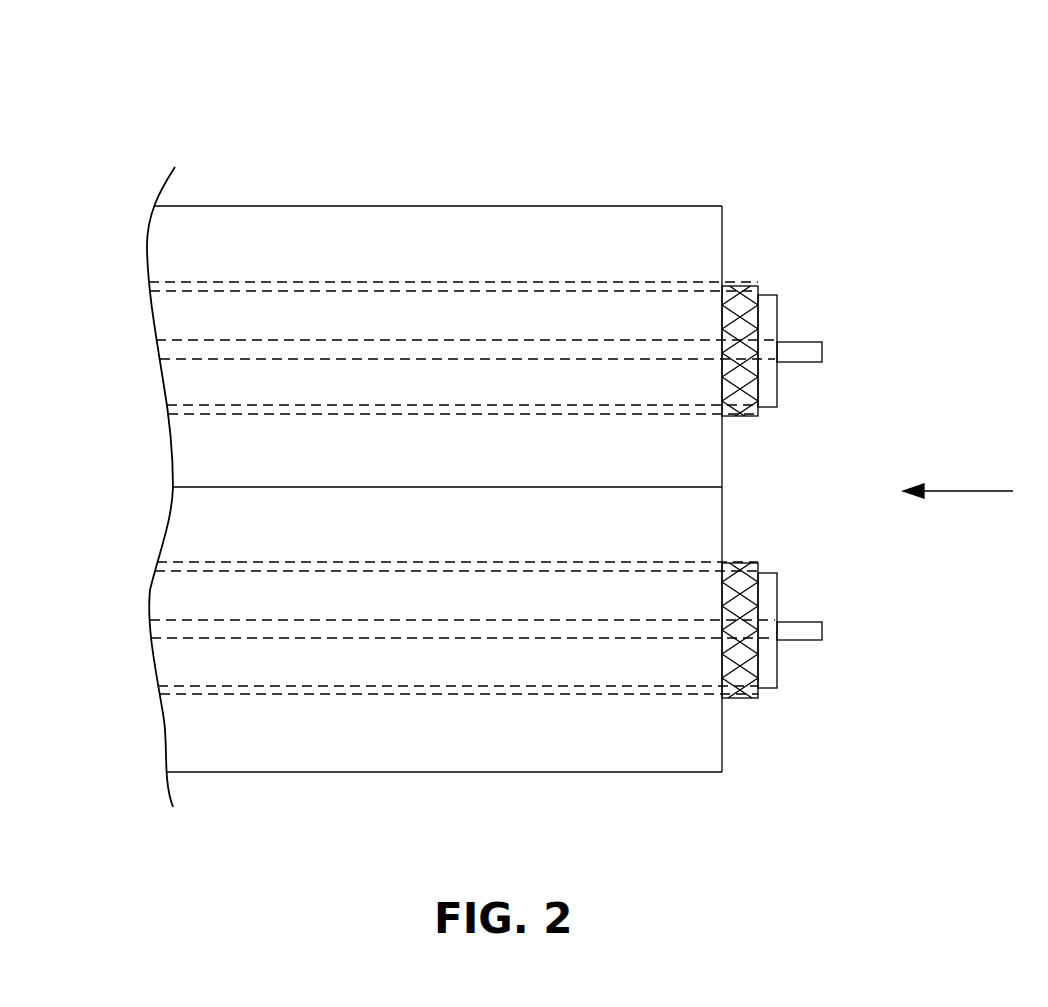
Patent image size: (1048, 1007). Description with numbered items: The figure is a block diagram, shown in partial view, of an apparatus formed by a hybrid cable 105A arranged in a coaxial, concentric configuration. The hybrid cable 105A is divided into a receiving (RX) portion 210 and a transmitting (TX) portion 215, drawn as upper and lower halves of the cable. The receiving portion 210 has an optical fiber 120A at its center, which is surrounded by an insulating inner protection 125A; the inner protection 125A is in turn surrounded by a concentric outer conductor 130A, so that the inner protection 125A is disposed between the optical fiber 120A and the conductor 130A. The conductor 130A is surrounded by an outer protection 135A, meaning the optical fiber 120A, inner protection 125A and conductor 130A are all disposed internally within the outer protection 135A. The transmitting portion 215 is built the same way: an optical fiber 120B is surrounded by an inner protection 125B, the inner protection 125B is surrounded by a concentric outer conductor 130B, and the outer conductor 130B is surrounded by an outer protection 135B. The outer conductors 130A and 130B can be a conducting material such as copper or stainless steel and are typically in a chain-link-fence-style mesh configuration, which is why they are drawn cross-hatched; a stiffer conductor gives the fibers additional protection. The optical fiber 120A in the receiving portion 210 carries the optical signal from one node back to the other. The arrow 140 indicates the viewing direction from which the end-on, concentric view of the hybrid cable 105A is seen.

The hybrid cable 105A is at (866, 133).
The receiving portion 210 is at (465, 206).
The transmitting portion 215 is at (463, 772).
The outer protection 135A is at (610, 228).
The outer protection 135B is at (611, 758).
The outer conductor 130A is at (740, 286).
The outer conductor 130B is at (738, 698).
The inner protection 125A is at (767, 295).
The inner protection 125B is at (765, 688).
The optical fiber 120A is at (798, 342).
The optical fiber 120B is at (798, 640).
The arrow 140 is at (957, 491).